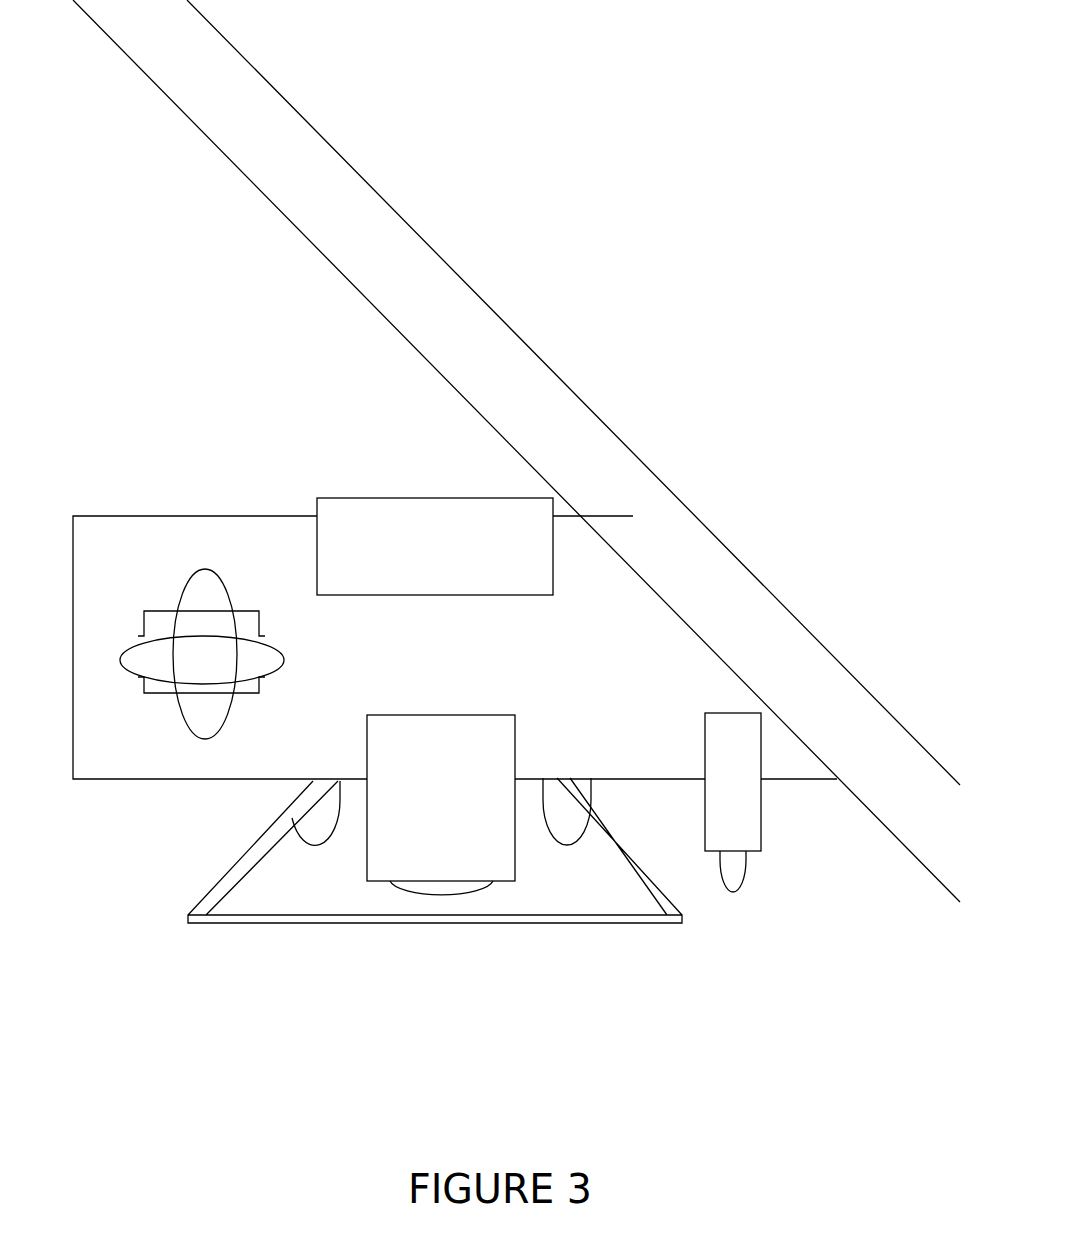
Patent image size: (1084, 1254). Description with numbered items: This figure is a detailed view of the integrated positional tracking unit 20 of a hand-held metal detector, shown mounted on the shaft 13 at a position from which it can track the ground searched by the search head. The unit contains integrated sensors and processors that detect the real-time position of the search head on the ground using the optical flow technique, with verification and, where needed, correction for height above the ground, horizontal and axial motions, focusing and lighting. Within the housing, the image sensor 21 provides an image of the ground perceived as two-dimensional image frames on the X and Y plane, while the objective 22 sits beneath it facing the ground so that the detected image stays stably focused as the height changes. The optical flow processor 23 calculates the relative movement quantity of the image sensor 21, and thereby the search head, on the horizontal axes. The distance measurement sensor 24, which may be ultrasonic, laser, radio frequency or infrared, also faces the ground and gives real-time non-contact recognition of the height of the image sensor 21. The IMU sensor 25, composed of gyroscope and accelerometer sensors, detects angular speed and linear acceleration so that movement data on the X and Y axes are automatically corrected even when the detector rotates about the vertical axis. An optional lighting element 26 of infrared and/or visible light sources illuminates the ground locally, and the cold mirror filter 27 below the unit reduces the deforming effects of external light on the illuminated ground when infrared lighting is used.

The shaft 13 is at (478, 343).
The integrated positional tracking unit 20 is at (208, 452).
The image sensor 21 is at (437, 773).
The objective 22 is at (442, 900).
The optical flow processor 23 is at (455, 559).
The distance measurement sensor 24 is at (748, 882).
The IMU sensor 25 is at (159, 710).
The lighting element 26 is at (568, 847).
The cold mirror filter 27 is at (295, 927).